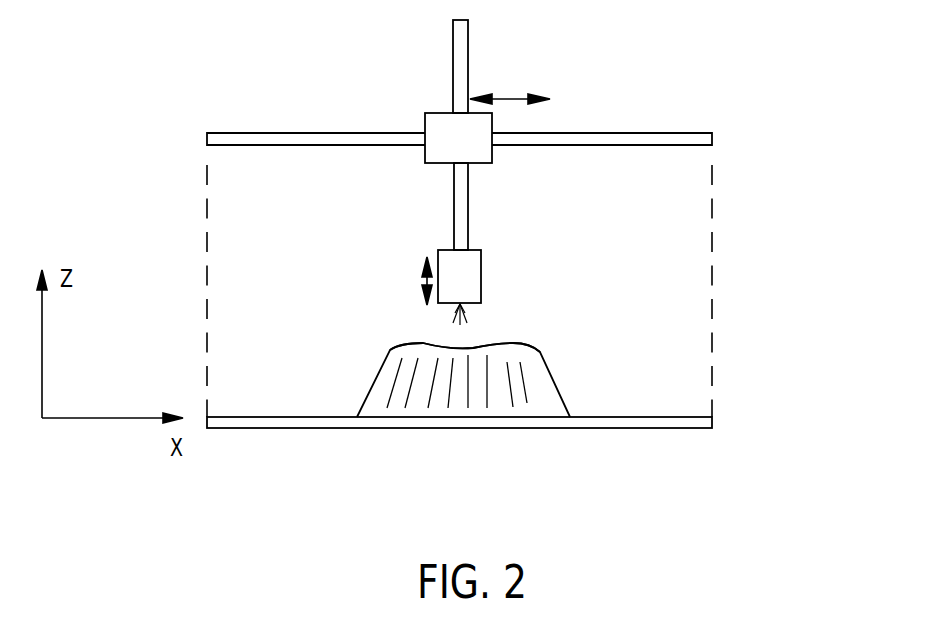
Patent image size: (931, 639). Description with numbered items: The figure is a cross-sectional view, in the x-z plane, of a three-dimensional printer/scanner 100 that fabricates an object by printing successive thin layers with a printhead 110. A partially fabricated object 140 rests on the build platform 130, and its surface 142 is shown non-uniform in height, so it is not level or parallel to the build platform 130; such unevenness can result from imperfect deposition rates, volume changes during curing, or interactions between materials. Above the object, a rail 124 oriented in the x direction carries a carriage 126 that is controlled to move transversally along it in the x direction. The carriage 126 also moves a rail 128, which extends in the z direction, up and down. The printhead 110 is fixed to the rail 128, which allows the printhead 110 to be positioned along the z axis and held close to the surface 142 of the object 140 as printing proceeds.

The printer/scanner 100 is at (726, 484).
The printhead 110 is at (482, 270).
The rail 124 is at (390, 132).
The carriage 126 is at (443, 113).
The rail 128 is at (469, 54).
The build platform 130 is at (622, 430).
The object 140 is at (540, 397).
The surface 142 is at (513, 343).